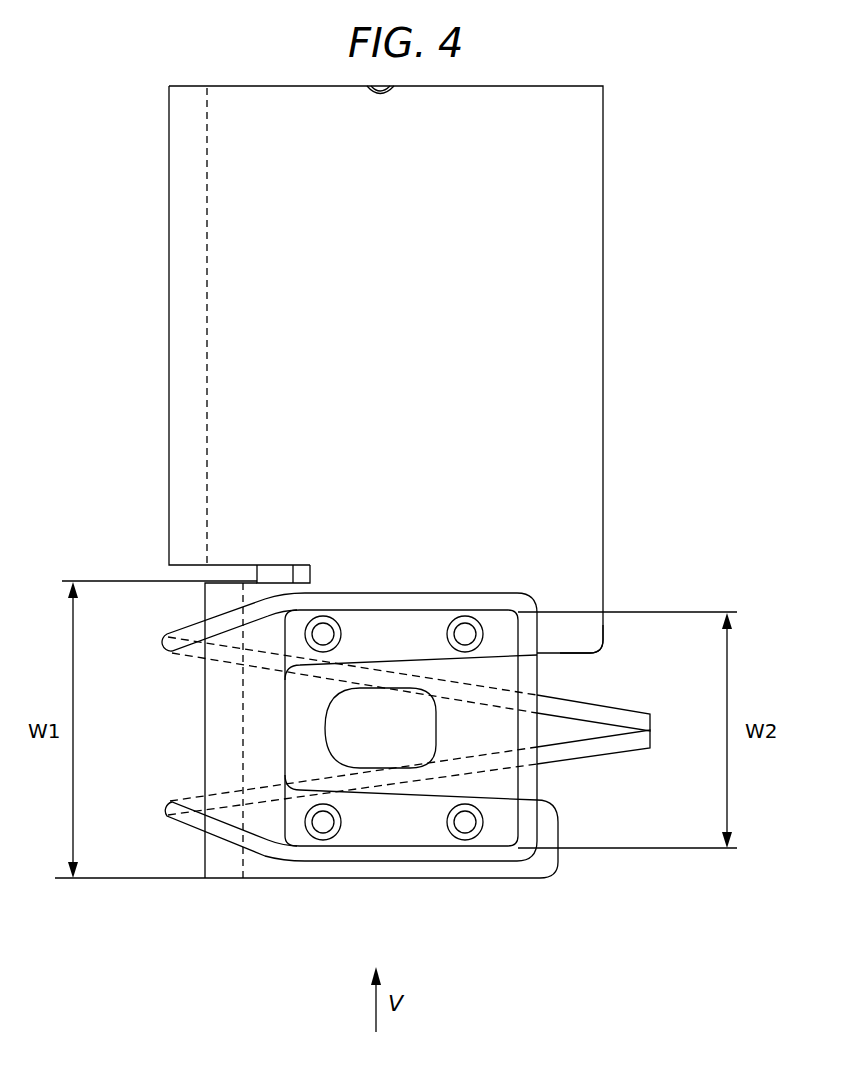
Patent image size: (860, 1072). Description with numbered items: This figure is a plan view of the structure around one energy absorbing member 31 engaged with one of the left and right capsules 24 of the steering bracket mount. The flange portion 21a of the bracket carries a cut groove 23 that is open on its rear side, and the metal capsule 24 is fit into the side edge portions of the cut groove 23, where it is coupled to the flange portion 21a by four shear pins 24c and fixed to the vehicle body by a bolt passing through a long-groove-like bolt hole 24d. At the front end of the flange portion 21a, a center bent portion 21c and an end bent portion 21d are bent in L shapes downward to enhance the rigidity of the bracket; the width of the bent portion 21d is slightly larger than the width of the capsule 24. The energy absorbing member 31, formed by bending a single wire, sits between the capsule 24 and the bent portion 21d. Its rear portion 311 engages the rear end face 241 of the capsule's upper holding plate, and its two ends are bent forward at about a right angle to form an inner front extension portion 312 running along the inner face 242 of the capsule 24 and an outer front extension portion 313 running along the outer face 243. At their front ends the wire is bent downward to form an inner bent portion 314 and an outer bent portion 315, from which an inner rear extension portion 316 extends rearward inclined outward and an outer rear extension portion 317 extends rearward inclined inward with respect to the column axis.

The flange portion 21a is at (597, 385).
The bent portion 21c is at (205, 330).
The bent portion 21d is at (227, 757).
The cut groove 23 is at (567, 655).
The capsule 24 is at (258, 721).
The shear pin 24c is at (325, 616).
The bolt hole 24d is at (378, 700).
The rear end face 241 is at (522, 813).
The inner face 242 is at (413, 605).
The outer face 243 is at (420, 845).
The energy absorbing member 31 is at (663, 743).
The rear portion 311 is at (528, 678).
The inner front extension portion 312 is at (370, 602).
The outer front extension portion 313 is at (367, 858).
The inner bent portion 314 is at (165, 641).
The outer bent portion 315 is at (165, 809).
The inner rear extension portion 316 is at (628, 718).
The outer rear extension portion 317 is at (633, 742).